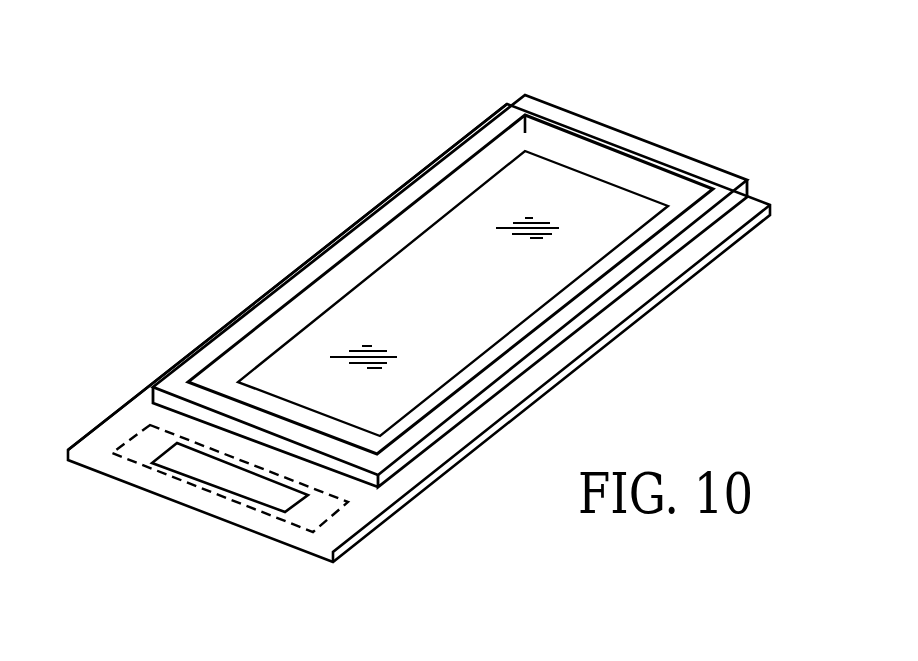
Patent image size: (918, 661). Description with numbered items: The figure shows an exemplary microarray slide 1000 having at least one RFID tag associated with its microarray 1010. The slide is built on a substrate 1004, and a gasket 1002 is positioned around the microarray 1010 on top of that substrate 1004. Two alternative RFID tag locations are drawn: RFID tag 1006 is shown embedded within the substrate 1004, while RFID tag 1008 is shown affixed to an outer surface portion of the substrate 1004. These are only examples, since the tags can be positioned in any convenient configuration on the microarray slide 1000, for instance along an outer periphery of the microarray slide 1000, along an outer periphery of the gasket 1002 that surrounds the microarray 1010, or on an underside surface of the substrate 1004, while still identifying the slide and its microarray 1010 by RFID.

The microarray slide 1000 is at (600, 78).
The gasket 1002 is at (672, 160).
The substrate 1004 is at (722, 230).
The RFID tag 1006 is at (187, 466).
The RFID tag 1008 is at (322, 518).
The microarray 1010 is at (430, 268).